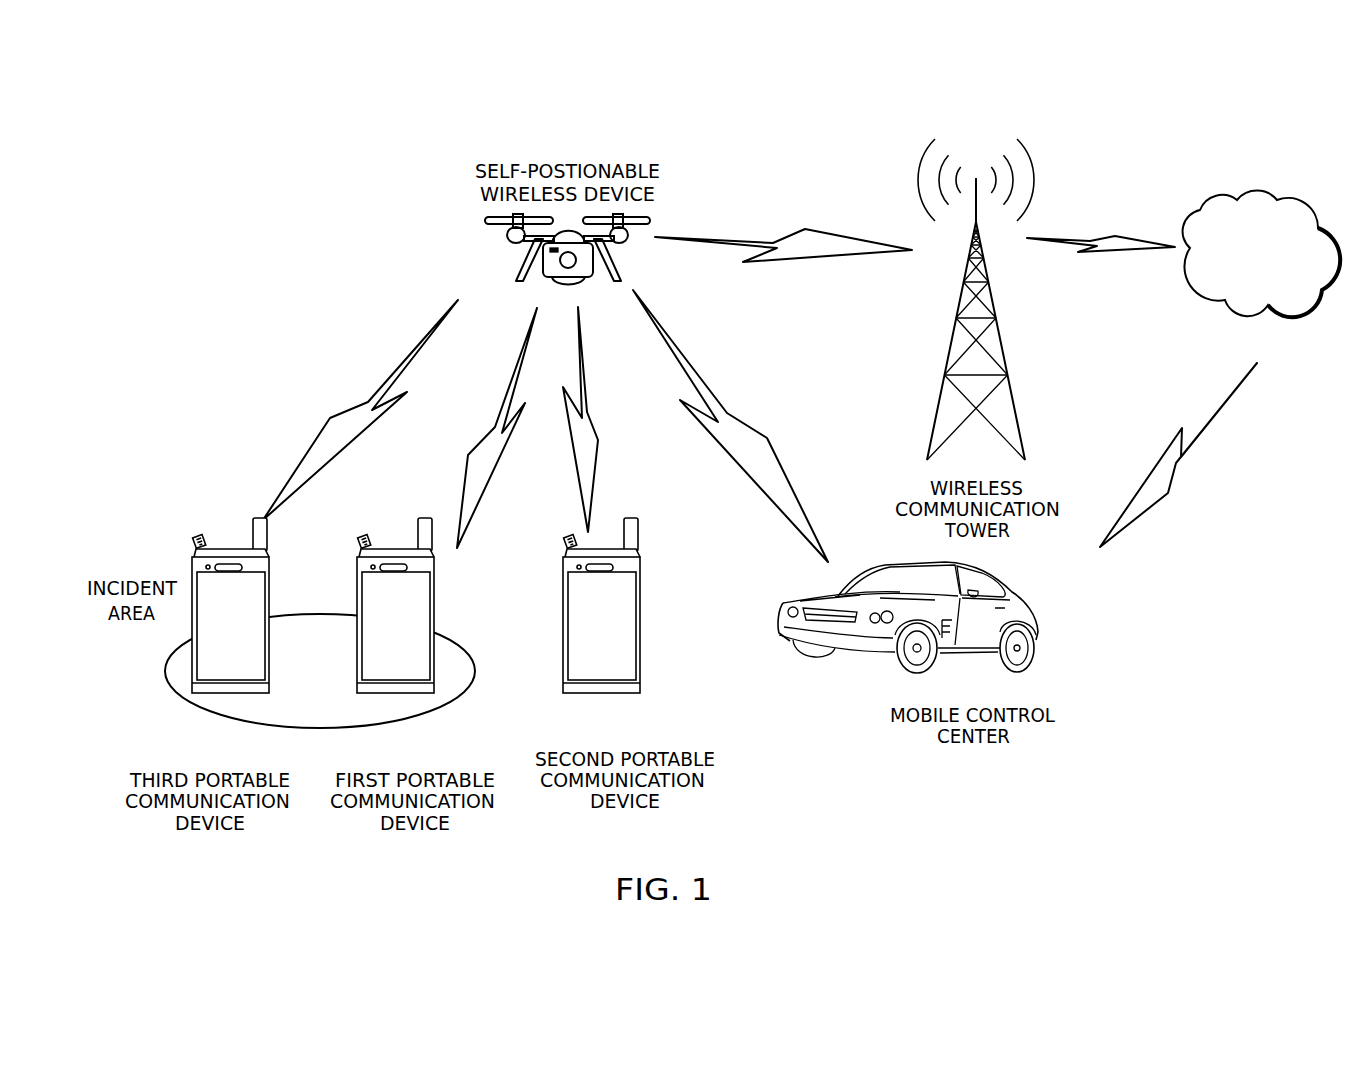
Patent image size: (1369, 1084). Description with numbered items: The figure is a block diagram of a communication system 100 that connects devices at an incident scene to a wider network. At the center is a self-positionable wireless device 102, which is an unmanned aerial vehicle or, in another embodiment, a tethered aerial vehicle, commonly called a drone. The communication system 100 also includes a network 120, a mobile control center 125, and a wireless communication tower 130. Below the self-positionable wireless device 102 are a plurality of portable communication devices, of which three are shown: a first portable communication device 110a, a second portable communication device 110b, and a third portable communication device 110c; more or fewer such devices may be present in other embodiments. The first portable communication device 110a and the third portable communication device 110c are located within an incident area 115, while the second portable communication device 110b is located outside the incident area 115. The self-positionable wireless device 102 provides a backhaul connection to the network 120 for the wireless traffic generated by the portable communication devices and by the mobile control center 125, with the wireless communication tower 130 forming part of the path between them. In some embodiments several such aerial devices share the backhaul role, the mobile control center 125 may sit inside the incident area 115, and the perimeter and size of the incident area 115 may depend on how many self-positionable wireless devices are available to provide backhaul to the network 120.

The communication system 100 is at (160, 148).
The self-positionable wireless device 102 is at (621, 279).
The first portable communication device 110a is at (395, 695).
The second portable communication device 110b is at (601, 694).
The third portable communication device 110c is at (230, 695).
The incident area 115 is at (168, 658).
The network 120 is at (1250, 192).
The mobile control center 125 is at (970, 655).
The wireless communication tower 130 is at (1002, 332).